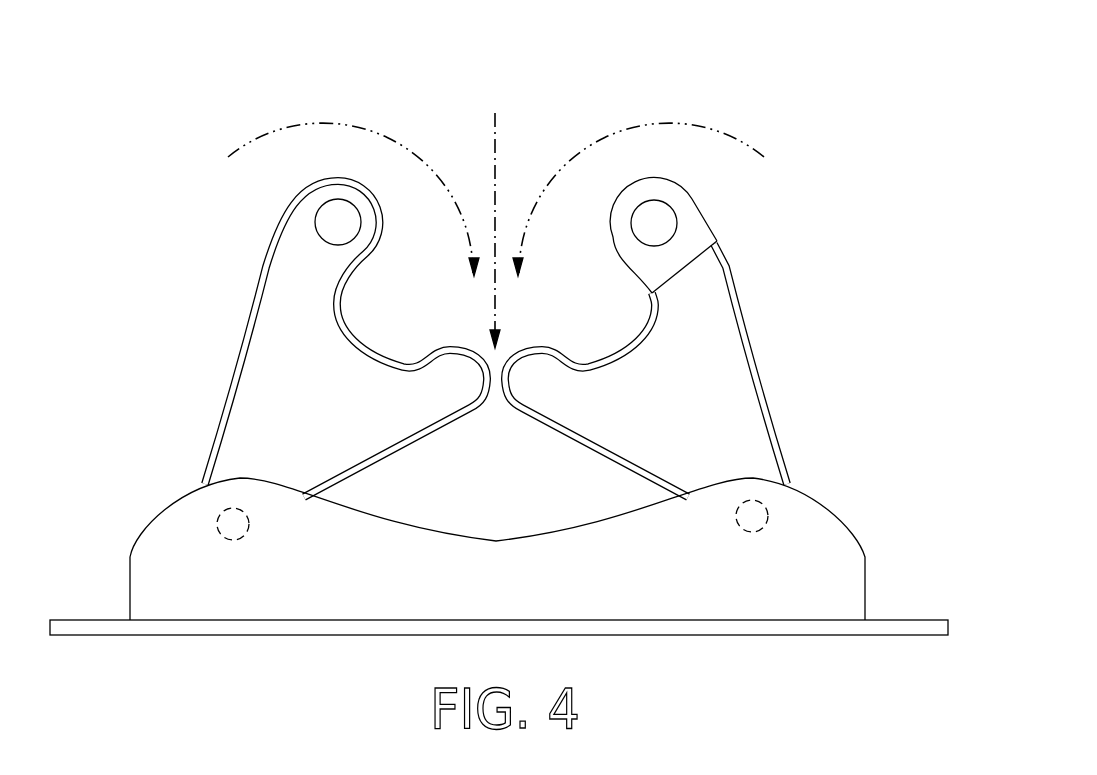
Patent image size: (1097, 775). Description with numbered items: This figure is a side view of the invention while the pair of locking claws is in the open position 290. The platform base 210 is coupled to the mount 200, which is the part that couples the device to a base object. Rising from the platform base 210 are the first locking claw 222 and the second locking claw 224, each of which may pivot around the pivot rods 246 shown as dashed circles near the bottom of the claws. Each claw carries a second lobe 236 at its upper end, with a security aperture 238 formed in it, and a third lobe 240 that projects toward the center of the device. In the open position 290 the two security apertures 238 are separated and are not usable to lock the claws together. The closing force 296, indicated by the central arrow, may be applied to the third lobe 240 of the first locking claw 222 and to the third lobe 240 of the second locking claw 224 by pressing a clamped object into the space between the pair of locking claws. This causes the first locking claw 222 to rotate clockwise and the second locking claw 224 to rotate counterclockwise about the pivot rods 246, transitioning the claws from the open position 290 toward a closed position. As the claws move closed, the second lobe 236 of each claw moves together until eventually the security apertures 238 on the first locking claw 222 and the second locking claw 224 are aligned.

The mount 200 is at (790, 635).
The platform base 210 is at (703, 590).
The first locking claw 222 is at (317, 383).
The second locking claw 224 is at (690, 395).
The second lobe 236 is at (307, 265).
The security aperture 238 is at (313, 228).
The third lobe 240 is at (420, 400).
The pivot rod 246 is at (217, 517).
The open position 290 is at (830, 138).
The closing force 296 is at (496, 216).